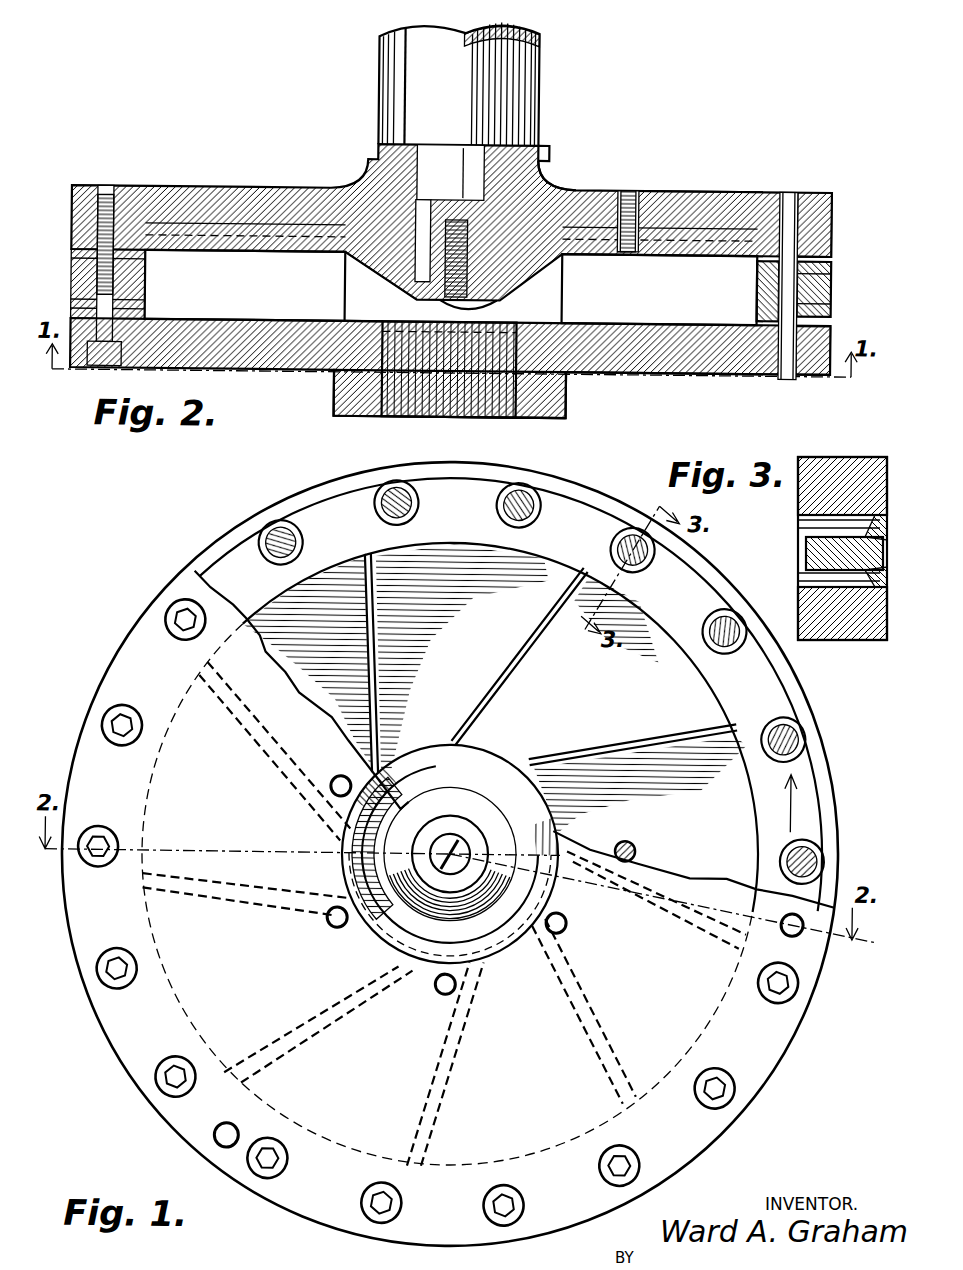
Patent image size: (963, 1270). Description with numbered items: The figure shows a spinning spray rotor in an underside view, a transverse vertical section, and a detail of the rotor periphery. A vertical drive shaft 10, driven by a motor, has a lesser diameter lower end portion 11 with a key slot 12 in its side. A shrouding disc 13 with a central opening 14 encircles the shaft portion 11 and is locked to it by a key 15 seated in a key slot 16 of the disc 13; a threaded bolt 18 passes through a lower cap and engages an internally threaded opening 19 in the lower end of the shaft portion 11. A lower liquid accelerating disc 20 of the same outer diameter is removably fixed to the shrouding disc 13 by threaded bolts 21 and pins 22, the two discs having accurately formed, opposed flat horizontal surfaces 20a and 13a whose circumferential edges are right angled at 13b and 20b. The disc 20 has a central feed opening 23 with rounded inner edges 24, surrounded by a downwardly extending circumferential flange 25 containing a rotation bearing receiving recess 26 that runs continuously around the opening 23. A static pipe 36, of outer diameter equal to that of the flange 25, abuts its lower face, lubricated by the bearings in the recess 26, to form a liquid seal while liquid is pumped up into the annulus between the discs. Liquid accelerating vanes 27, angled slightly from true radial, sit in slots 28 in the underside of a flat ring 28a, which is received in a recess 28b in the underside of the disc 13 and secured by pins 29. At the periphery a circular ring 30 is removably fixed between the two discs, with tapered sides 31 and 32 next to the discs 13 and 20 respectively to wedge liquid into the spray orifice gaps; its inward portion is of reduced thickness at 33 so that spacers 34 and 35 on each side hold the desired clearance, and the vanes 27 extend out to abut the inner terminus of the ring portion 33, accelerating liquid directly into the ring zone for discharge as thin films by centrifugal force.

In FIG. 2, the vertical drive shaft 10 is at (530, 72).
In FIG. 2, the lesser diameter lower end portion 11 is at (445, 147).
In FIG. 2, the key slot 12 is at (445, 205).
In FIG. 2, the shrouding disc 13 is at (560, 175).
In FIG. 2, the flat horizontal surface 13a is at (835, 220).
In FIG. 3, the flat horizontal surface 13a is at (800, 507).
In FIG. 2, the right angled circumferential edge 13b is at (835, 252).
In FIG. 2, the opening 14 is at (545, 150).
In FIG. 2, the key 15 is at (418, 220).
In FIG. 2, the key slot 16 is at (414, 236).
In FIG. 2, the threaded bolt 18 is at (490, 308).
In FIG. 1, the threaded bolt 18 is at (447, 828).
In FIG. 2, the internally threaded opening 19 is at (470, 240).
In FIG. 2, the lower liquid accelerating disc 20 is at (232, 371).
In FIG. 3, the lower liquid accelerating disc 20 is at (850, 637).
In FIG. 1, the lower liquid accelerating disc 20 is at (450, 854).
In FIG. 2, the flat horizontal surface 20a is at (698, 359).
In FIG. 2, the right angled circumferential edge 20b is at (835, 324).
In FIG. 3, the right angled circumferential edge 20b is at (885, 583).
In FIG. 2, the threaded bolts 21 is at (100, 370).
In FIG. 1, the threaded bolts 21 is at (408, 505).
In FIG. 2, the pins 22 is at (808, 189).
In FIG. 1, the pins 22 is at (803, 923).
In FIG. 2, the feed opening 23 is at (522, 356).
In FIG. 2, the rounded inner edges 24 is at (362, 346).
In FIG. 2, the circumferential flange 25 is at (560, 405).
In FIG. 1, the circumferential flange 25 is at (385, 937).
In FIG. 2, the rotation bearing receiving recess 26 is at (395, 358).
In FIG. 1, the rotation bearing receiving recess 26 is at (370, 909).
In FIG. 2, the liquid accelerating vanes 27 is at (255, 305).
In FIG. 1, the liquid accelerating vanes 27 is at (520, 678).
In FIG. 2, the slots 28 is at (285, 198).
In FIG. 2, the flat ring 28a is at (222, 222).
In FIG. 1, the flat ring 28a is at (465, 545).
In FIG. 2, the recess 28b is at (178, 213).
In FIG. 2, the pins 29 is at (648, 189).
In FIG. 1, the pins 29 is at (637, 843).
In FIG. 2, the circular ring 30 is at (835, 280).
In FIG. 3, the circular ring 30 is at (886, 525).
In FIG. 2, the tapered side 31 is at (770, 225).
In FIG. 2, the tapered side 32 is at (835, 300).
In FIG. 3, the tapered side 32 is at (880, 600).
In FIG. 1, the tapered side 32 is at (707, 565).
In FIG. 2, the reduced thickness portion 33 is at (758, 296).
In FIG. 3, the reduced thickness portion 33 is at (806, 552).
In FIG. 1, the reduced thickness portion 33 is at (707, 670).
In FIG. 2, the spacers 34 is at (147, 263).
In FIG. 2, the spacers 35 is at (147, 311).
In FIG. 1, the spacers 35 is at (797, 729).
In FIG. 2, the static pipe 36 is at (343, 411).